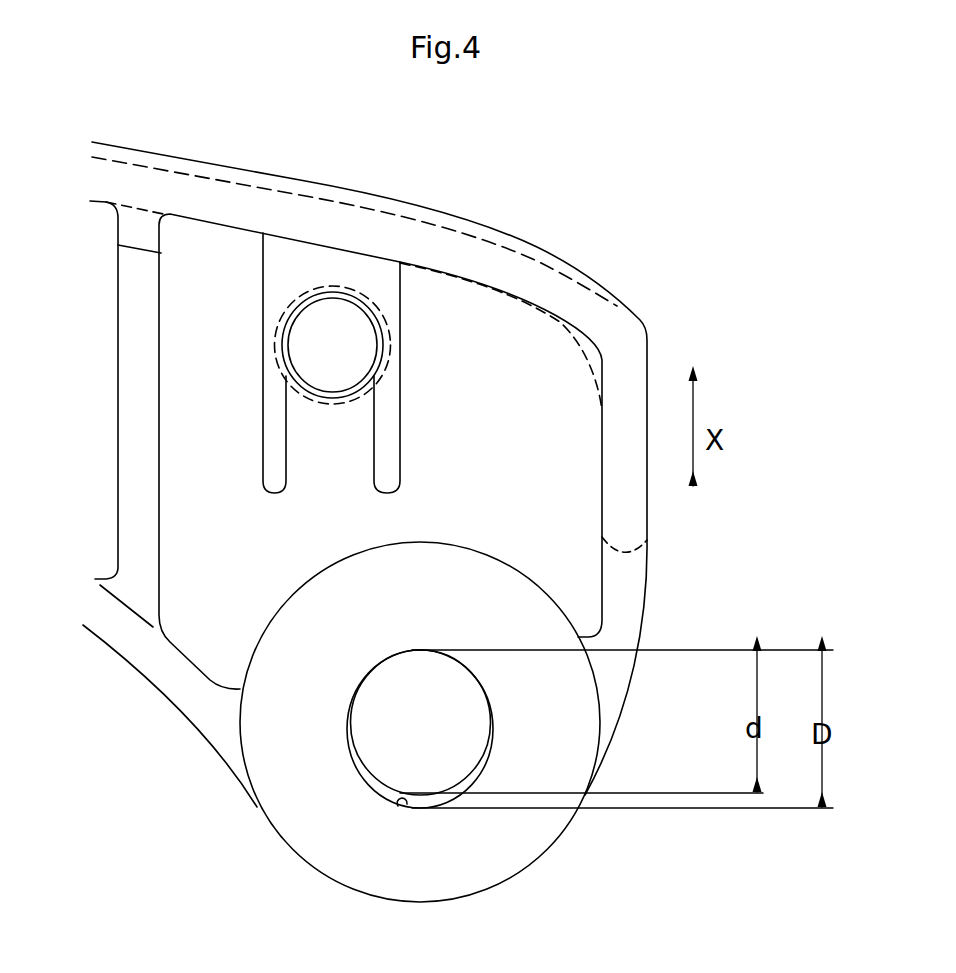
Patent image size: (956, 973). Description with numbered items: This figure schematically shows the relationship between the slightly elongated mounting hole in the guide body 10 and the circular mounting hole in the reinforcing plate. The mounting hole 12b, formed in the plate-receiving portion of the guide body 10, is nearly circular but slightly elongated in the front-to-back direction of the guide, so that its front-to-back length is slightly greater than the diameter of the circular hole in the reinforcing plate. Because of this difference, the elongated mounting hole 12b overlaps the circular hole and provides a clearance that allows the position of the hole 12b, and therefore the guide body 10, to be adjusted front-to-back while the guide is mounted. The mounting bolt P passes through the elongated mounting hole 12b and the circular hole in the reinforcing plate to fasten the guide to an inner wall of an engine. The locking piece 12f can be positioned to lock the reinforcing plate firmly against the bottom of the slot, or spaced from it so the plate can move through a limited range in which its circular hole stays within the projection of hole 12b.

The guide body 10 is at (537, 248).
The locking piece 12f is at (357, 350).
The mounting bolt P is at (385, 768).
The mounting hole 12b is at (400, 805).